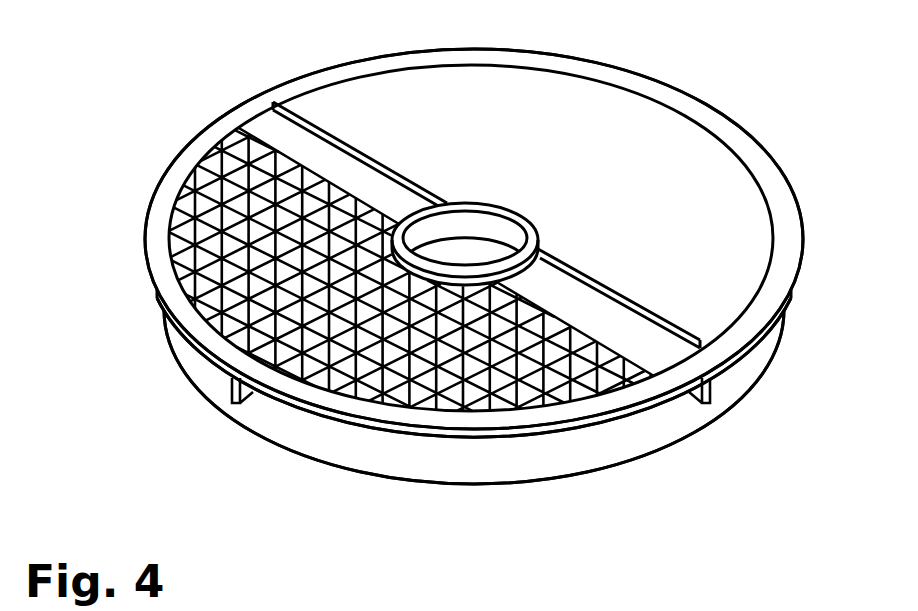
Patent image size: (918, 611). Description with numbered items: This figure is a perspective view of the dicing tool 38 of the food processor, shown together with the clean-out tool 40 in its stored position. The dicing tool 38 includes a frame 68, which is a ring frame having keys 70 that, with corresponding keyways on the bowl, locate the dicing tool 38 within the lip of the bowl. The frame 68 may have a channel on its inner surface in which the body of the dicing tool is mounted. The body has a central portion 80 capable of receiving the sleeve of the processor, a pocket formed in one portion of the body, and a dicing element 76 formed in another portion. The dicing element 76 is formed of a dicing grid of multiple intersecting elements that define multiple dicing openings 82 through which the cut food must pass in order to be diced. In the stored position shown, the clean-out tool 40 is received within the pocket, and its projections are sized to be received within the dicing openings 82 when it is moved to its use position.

The dicing tool 38 is at (432, 487).
The clean-out tool 40 is at (565, 112).
The frame 68 is at (523, 463).
The keys 70 is at (230, 396).
The dicing element 76 is at (175, 208).
The central portion 80 is at (452, 230).
The dicing openings 82 is at (168, 240).